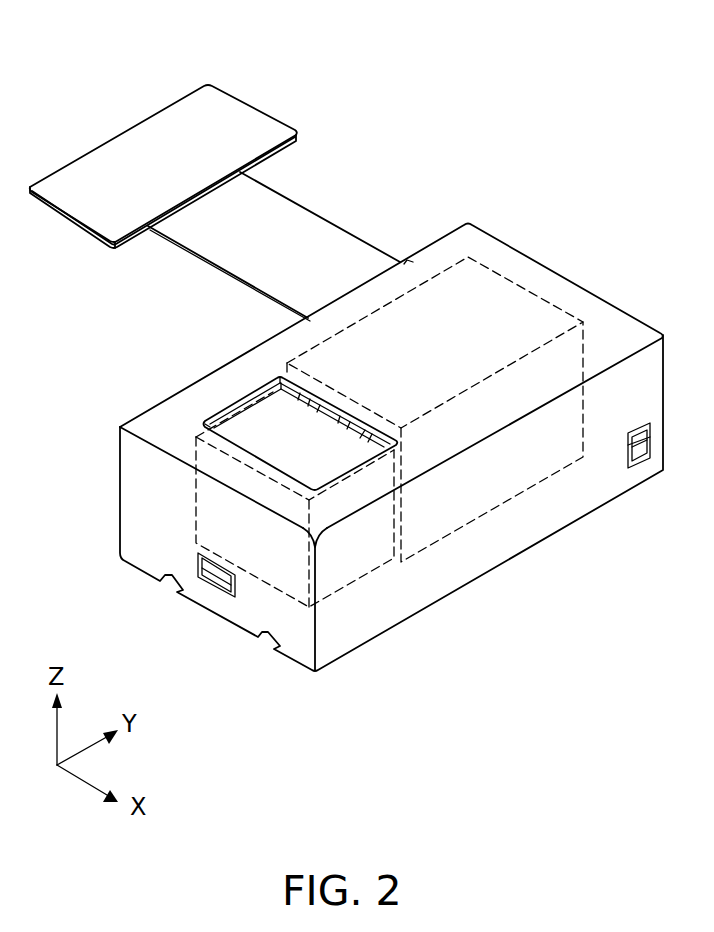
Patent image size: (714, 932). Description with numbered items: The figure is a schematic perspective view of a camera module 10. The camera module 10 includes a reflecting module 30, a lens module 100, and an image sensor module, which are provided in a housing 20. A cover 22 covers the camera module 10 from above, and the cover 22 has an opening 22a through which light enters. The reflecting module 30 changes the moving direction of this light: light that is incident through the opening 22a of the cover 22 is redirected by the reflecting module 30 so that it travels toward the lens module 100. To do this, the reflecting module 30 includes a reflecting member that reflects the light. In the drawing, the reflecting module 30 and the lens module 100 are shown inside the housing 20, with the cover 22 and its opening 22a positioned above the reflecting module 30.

The camera module 10 is at (323, 25).
The housing 20 is at (358, 622).
The cover 22 is at (167, 425).
The opening 22a is at (289, 437).
The reflecting module 30 is at (375, 554).
The lens module 100 is at (493, 485).